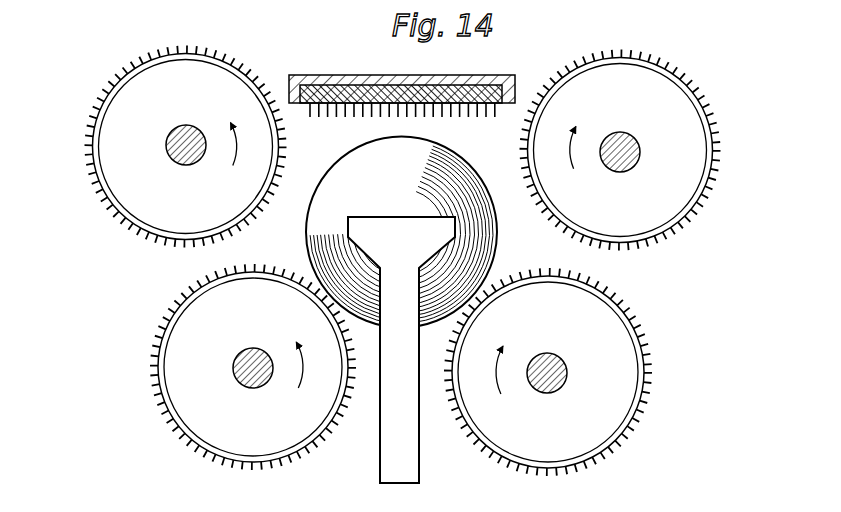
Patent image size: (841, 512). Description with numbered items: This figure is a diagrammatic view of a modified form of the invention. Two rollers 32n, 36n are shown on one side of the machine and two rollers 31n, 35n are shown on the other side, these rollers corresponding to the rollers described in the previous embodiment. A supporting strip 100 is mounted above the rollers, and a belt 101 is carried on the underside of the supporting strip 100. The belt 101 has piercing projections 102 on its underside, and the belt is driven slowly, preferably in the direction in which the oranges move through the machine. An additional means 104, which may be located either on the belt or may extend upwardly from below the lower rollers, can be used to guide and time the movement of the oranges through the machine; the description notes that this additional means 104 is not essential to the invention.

The roller 36n is at (110, 175).
The roller 35n is at (687, 137).
The roller 32n is at (172, 356).
The roller 31n is at (615, 355).
The supporting strip 100 is at (352, 57).
The belt 101 is at (422, 69).
The piercing projections 102 is at (352, 114).
The additional means 104 is at (378, 468).